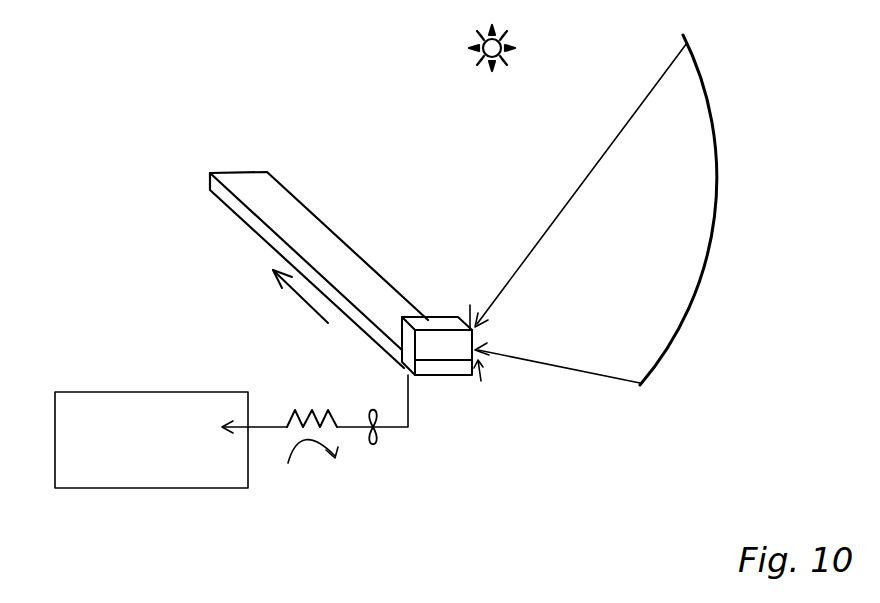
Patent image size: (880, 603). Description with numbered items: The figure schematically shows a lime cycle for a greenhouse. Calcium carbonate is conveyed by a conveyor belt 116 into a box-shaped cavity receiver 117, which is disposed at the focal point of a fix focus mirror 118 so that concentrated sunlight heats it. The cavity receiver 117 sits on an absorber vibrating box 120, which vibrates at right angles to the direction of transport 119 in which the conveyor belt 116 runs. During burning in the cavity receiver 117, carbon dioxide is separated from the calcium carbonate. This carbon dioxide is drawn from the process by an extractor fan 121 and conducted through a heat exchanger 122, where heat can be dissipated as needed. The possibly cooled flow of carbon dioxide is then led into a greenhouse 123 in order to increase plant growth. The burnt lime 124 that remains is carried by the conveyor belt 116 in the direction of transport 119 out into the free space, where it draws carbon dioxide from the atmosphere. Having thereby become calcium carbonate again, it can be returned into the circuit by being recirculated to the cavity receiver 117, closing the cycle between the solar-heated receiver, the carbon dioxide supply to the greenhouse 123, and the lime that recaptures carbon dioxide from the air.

The conveyor belt 116 is at (283, 186).
The cavity receiver 117 is at (433, 327).
The fix focus mirror 118 is at (700, 70).
The direction of transport 119 is at (290, 293).
The absorber vibrating box 120 is at (447, 370).
The extractor fan 121 is at (373, 407).
The heat exchanger 122 is at (307, 438).
The greenhouse 123 is at (115, 465).
The burnt lime 124 is at (285, 222).